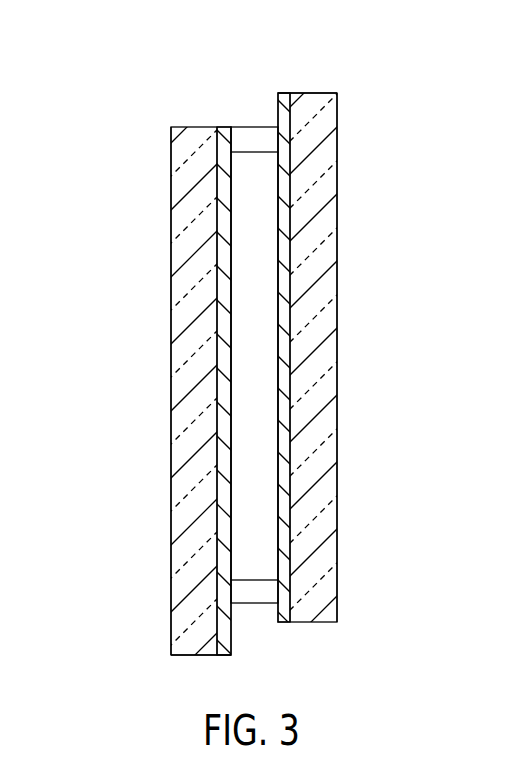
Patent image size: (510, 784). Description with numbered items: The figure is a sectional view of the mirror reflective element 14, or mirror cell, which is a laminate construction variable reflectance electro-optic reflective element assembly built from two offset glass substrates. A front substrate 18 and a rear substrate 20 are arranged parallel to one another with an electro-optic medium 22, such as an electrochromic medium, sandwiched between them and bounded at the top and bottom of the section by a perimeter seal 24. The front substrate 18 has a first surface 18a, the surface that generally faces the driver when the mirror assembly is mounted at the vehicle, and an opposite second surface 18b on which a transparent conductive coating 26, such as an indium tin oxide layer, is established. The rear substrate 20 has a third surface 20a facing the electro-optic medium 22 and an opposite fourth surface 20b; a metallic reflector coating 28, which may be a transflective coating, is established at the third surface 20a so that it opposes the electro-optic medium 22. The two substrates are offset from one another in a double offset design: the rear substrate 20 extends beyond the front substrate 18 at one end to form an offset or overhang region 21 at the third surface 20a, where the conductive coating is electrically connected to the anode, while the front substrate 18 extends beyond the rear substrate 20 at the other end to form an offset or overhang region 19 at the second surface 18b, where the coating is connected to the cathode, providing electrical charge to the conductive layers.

The mirror reflective element 14 is at (145, 118).
The front substrate 18 is at (178, 142).
The first surface 18a is at (173, 267).
The second surface 18b is at (224, 342).
The offset or overhang region 19 is at (232, 643).
The rear substrate 20 is at (328, 103).
The third surface 20a is at (293, 442).
The fourth surface 20b is at (338, 403).
The offset or overhang region 21 is at (277, 108).
The electro-optic medium 22 is at (263, 232).
The perimeter seal 24 is at (253, 132).
The transparent conductive coating 26 is at (219, 542).
The metallic reflector coating 28 is at (290, 535).